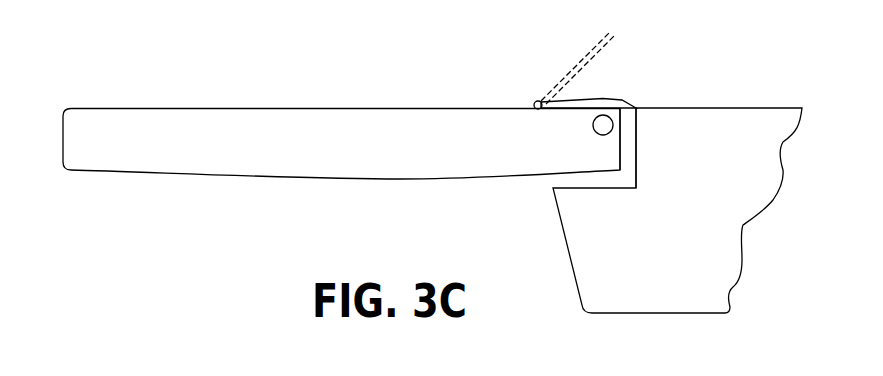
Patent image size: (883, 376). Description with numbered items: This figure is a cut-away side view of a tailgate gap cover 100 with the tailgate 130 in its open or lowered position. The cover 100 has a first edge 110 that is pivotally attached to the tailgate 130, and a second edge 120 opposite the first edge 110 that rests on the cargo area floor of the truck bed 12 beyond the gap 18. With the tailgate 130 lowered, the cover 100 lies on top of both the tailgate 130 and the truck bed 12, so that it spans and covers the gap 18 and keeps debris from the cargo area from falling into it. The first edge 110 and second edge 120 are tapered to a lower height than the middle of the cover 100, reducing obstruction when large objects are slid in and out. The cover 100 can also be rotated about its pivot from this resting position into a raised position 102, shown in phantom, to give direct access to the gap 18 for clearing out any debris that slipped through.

The truck bed 12 is at (753, 108).
The gap 18 is at (628, 125).
The tailgate gap cover 100 is at (622, 108).
The raised position 102 is at (587, 53).
The first edge 110 is at (536, 102).
The second edge 120 is at (640, 108).
The tailgate 130 is at (128, 108).